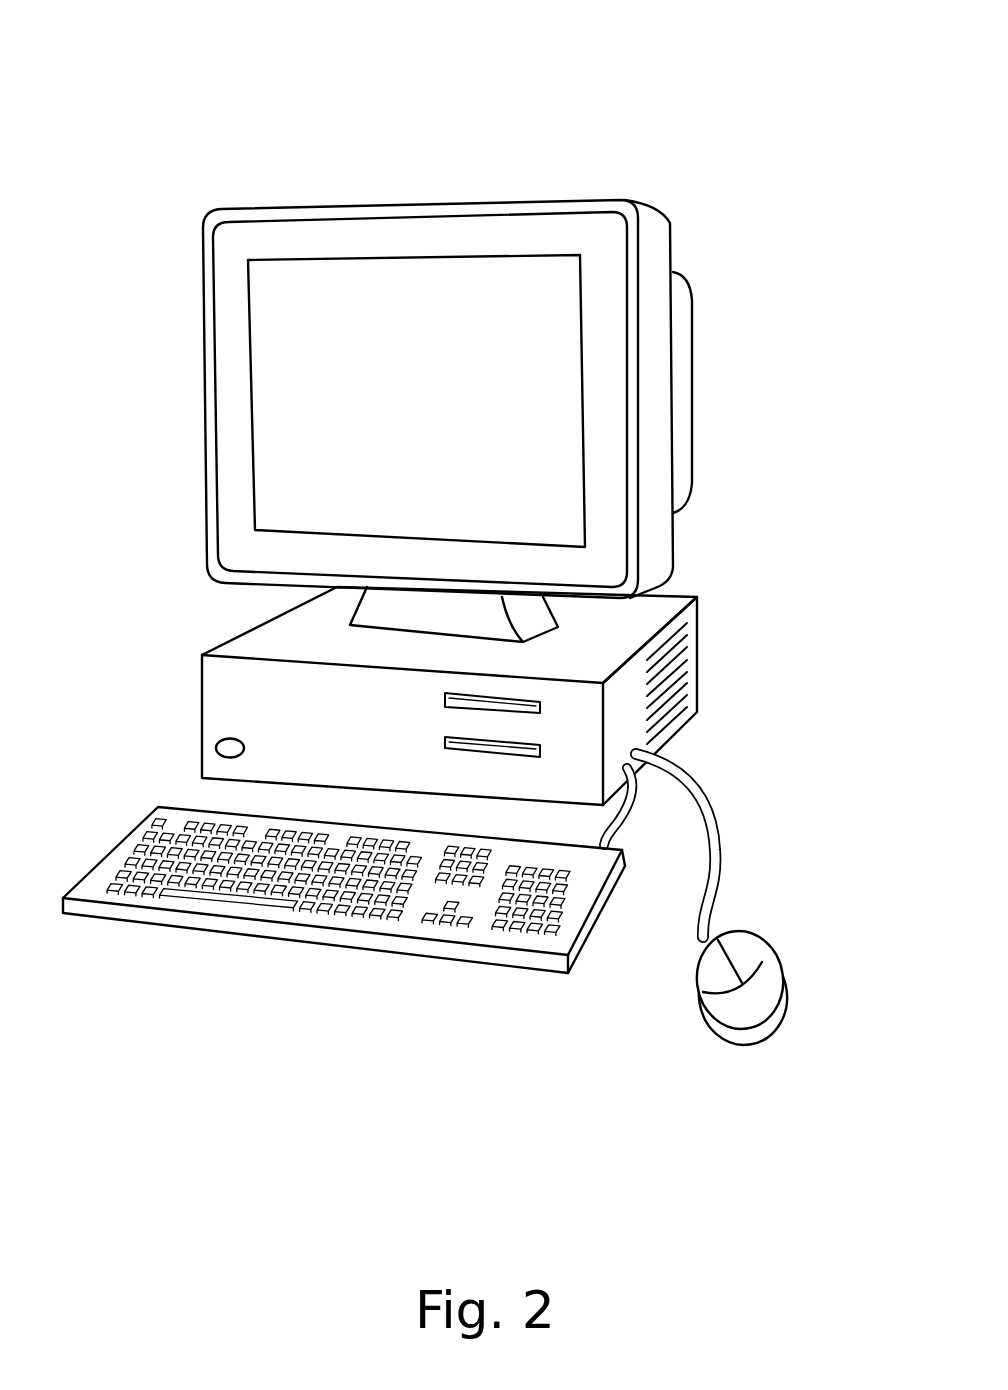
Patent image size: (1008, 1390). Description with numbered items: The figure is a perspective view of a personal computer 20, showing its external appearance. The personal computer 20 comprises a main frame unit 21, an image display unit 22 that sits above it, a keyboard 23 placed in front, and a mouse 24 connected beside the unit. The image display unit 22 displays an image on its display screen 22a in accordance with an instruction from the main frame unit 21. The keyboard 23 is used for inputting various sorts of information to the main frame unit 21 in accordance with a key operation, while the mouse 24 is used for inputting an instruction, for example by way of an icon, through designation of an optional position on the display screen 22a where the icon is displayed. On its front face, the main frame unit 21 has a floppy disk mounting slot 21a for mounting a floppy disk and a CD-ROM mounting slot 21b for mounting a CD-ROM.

The personal computer 20 is at (582, 136).
The main frame unit 21 is at (673, 682).
The floppy disk mounting slot 21a is at (438, 699).
The CD-ROM mounting slot 21b is at (438, 743).
The image display unit 22 is at (665, 333).
The display screen 22a is at (547, 426).
The keyboard 23 is at (268, 915).
The mouse 24 is at (758, 998).